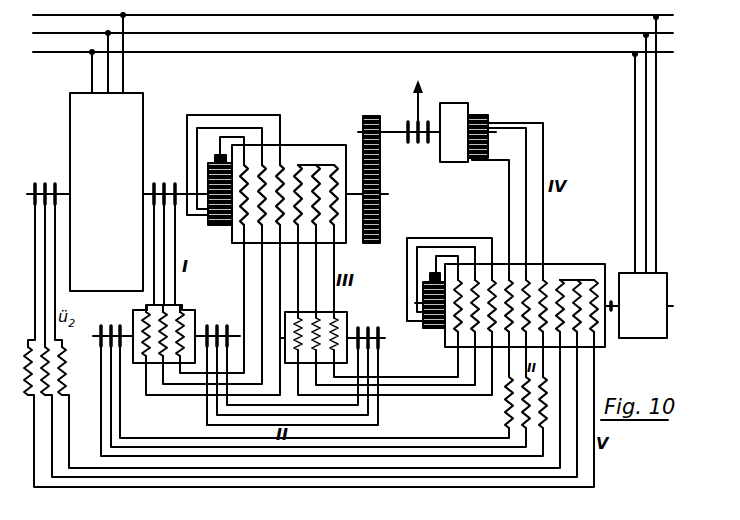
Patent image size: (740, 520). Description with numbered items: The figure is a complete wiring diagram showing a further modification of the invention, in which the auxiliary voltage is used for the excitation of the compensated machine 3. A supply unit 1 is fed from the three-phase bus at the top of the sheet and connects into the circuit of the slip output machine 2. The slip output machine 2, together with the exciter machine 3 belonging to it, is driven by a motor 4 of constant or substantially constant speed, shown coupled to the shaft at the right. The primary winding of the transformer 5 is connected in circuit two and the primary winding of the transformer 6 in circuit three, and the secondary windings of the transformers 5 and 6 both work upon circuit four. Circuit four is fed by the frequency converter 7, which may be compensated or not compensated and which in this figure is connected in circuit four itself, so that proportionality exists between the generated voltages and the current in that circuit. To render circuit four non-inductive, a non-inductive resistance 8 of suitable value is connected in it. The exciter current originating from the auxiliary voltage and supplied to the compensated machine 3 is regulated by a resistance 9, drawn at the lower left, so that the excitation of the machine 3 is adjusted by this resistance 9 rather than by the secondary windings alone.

The regulating transformer 1 is at (136, 118).
The slip output machine 2 is at (302, 152).
The exciter machine 3 is at (552, 270).
The motor 4 is at (641, 339).
The transformer 5 is at (197, 318).
The transformer 6 is at (349, 328).
The frequency converter 7 is at (458, 110).
The non-inductive resistance 8 is at (507, 416).
The resistance 9 is at (60, 378).